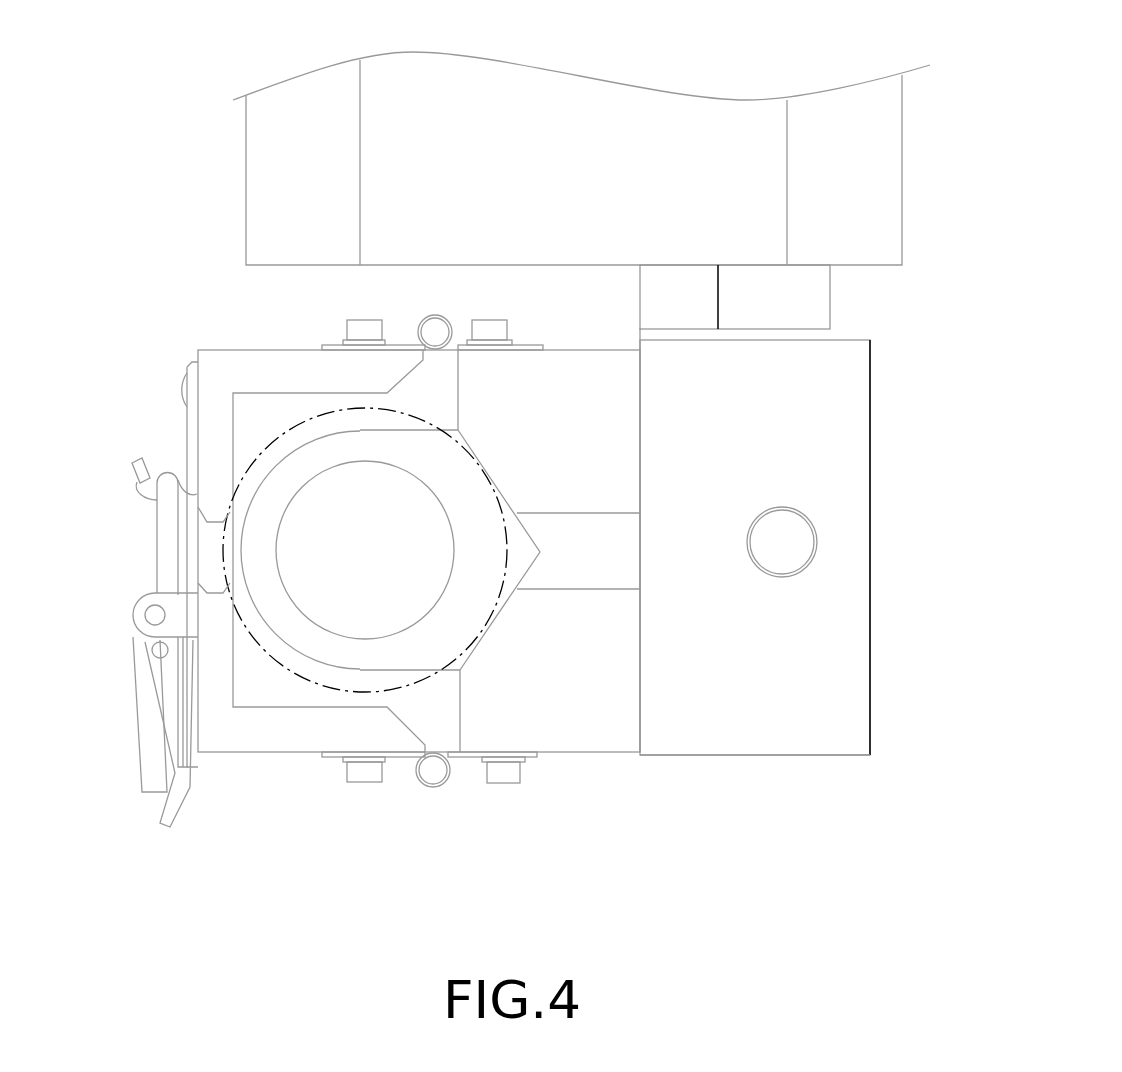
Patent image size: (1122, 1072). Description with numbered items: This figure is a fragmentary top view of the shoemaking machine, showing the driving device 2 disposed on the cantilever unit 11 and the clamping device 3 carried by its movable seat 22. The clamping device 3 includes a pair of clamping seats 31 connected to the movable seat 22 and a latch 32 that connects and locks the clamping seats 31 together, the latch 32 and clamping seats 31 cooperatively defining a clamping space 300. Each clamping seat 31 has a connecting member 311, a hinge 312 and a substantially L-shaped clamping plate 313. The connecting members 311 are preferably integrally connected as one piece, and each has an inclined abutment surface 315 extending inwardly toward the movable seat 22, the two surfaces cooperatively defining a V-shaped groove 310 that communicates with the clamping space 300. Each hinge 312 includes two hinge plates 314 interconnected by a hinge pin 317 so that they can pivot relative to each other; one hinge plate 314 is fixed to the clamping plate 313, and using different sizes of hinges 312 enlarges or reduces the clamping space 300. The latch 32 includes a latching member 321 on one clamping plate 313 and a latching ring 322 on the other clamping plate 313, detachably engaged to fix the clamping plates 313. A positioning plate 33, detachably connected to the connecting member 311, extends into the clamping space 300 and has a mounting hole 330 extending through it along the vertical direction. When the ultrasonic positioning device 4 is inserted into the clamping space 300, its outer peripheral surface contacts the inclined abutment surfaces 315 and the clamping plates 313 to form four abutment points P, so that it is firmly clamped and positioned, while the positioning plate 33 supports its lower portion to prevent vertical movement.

The cantilever unit 11 is at (247, 167).
The driving device 2 is at (872, 394).
The movable seat 22 is at (670, 757).
The clamping device 3 is at (178, 417).
The clamping space 300 is at (246, 712).
The clamping seat 31 is at (310, 350).
The V-shaped groove 310 is at (528, 558).
The connecting member 311 is at (588, 373).
The hinge 312 is at (418, 322).
The clamping plate 313 is at (280, 370).
The hinge plate 314 is at (335, 347).
The inclined abutment surface 315 is at (505, 497).
The hinge pin 317 is at (437, 775).
The latching member 321 is at (140, 472).
The latching ring 322 is at (168, 558).
The latch 32 is at (140, 648).
The positioning plate 33 is at (300, 640).
The mounting hole 330 is at (318, 498).
The ultrasonic positioning device 4 is at (526, 526).
The abutment point P is at (487, 470).